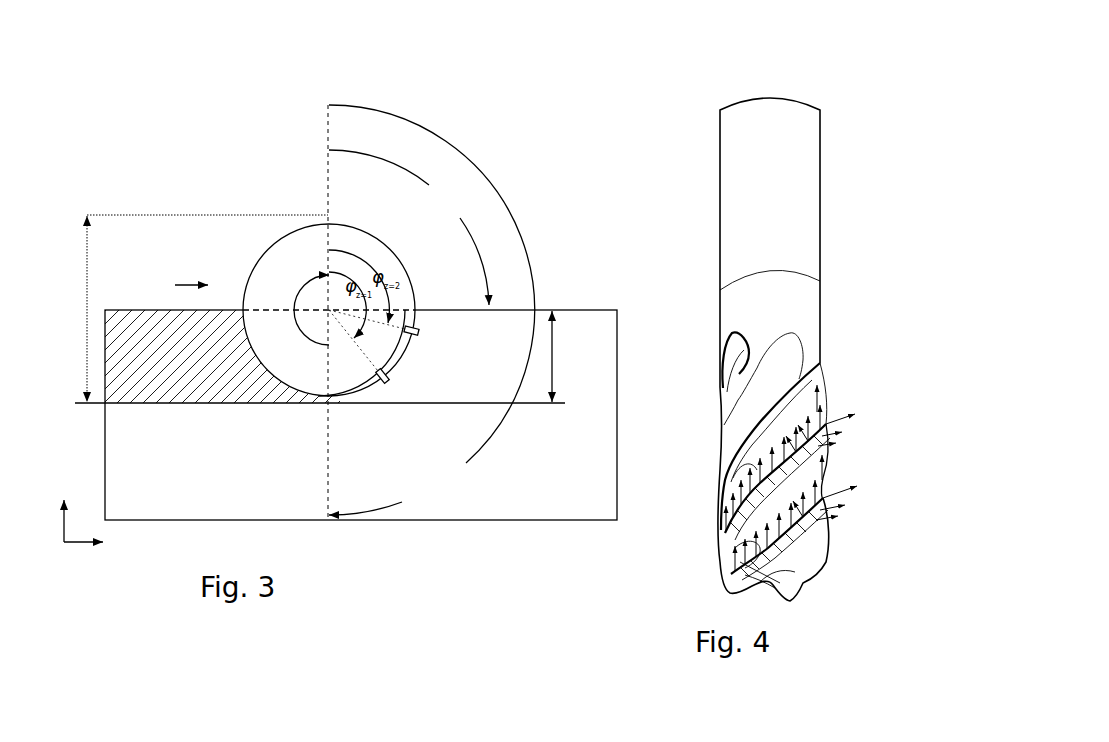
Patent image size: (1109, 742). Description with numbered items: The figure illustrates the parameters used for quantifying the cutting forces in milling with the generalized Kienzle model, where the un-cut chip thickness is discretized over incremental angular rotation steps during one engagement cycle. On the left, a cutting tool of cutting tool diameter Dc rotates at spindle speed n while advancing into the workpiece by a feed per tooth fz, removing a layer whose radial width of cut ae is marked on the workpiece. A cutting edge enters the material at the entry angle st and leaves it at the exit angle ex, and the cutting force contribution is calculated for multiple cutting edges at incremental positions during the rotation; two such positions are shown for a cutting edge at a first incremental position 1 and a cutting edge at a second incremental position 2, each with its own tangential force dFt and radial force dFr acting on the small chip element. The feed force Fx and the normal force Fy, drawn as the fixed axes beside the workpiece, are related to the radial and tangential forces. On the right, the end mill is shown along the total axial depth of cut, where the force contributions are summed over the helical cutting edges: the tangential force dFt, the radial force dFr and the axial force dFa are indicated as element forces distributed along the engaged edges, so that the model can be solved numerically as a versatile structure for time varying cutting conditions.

In FIG. 3, the cutting tool diameter Dc is at (67, 309).
In FIG. 3, the radial width of cut ae is at (571, 356).
In FIG. 3, the feed per tooth fz is at (191, 272).
In FIG. 3, the spindle speed n is at (298, 310).
In FIG. 3, the cutting edge at first incremental position 1 is at (361, 396).
In FIG. 3, the cutting edge at second incremental position 2 is at (430, 334).
In FIG. 3, the entry angle st is at (409, 227).
In FIG. 3, the exit angle ex is at (432, 310).
In FIG. 3, the feed force Fx is at (112, 543).
In FIG. 3, the normal force Fy is at (66, 507).
In FIG. 4, the tangential force dFt is at (850, 463).
In FIG. 4, the radial force dFr is at (790, 458).
In FIG. 4, the axial force dFa is at (833, 427).